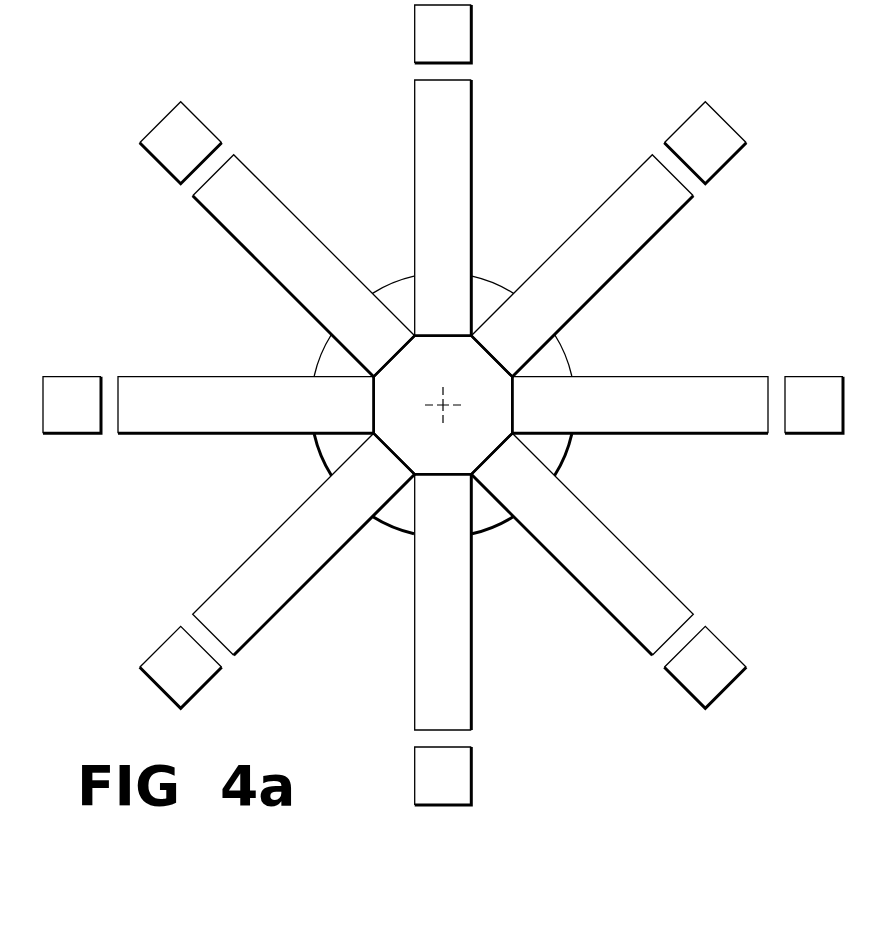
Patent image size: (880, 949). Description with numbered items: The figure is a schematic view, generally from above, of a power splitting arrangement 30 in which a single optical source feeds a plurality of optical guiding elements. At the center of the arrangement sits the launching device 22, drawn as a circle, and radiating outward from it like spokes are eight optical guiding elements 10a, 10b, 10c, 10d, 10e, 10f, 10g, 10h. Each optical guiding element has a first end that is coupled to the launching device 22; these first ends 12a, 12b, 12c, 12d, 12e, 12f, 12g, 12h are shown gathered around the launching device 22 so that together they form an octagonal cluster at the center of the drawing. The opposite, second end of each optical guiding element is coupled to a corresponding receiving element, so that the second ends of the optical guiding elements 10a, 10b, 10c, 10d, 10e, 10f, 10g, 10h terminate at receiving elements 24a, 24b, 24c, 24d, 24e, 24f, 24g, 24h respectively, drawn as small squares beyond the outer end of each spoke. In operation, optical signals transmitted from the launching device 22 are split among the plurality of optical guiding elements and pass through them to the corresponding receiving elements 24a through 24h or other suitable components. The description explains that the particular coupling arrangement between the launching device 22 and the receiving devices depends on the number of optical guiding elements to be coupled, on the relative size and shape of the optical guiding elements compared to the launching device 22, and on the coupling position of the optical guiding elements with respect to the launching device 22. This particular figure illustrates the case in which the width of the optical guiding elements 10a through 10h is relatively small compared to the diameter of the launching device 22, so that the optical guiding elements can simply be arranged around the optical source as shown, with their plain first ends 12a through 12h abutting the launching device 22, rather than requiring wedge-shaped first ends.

The power splitting arrangement 30 is at (298, 66).
The launching device 22 is at (400, 279).
The optical guiding element 10a is at (293, 204).
The optical guiding element 10b is at (411, 153).
The optical guiding element 10c is at (593, 207).
The optical guiding element 10d is at (693, 374).
The optical guiding element 10e is at (646, 557).
The optical guiding element 10f is at (409, 650).
The optical guiding element 10g is at (244, 555).
The optical guiding element 10h is at (195, 372).
The first end 12a is at (390, 350).
The first end 12b is at (455, 323).
The first end 12c is at (522, 350).
The first end 12d is at (552, 423).
The first end 12e is at (528, 487).
The first end 12f is at (460, 517).
The first end 12g is at (395, 483).
The first end 12h is at (362, 423).
The receiving element 24a is at (181, 143).
The receiving element 24b is at (443, 34).
The receiving element 24c is at (705, 143).
The receiving element 24d is at (814, 405).
The receiving element 24e is at (705, 667).
The receiving element 24f is at (443, 776).
The receiving element 24g is at (181, 667).
The receiving element 24h is at (72, 405).